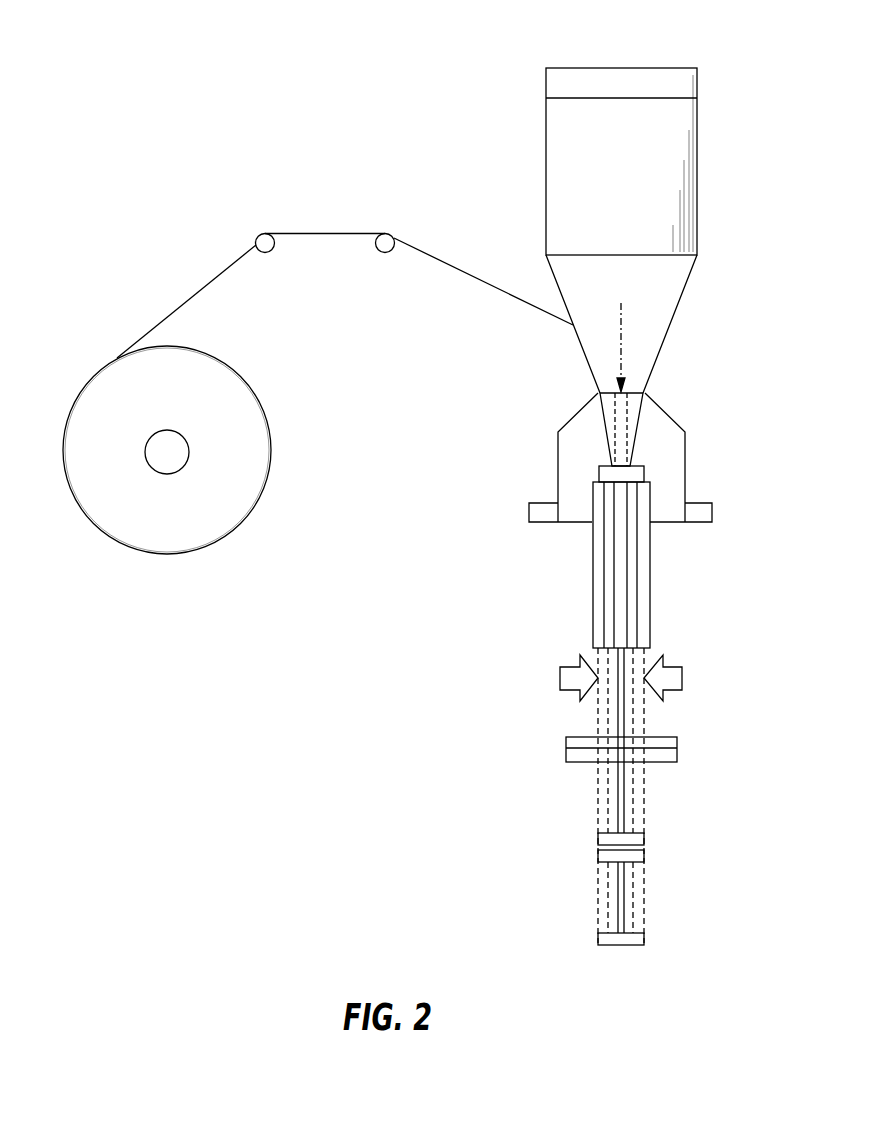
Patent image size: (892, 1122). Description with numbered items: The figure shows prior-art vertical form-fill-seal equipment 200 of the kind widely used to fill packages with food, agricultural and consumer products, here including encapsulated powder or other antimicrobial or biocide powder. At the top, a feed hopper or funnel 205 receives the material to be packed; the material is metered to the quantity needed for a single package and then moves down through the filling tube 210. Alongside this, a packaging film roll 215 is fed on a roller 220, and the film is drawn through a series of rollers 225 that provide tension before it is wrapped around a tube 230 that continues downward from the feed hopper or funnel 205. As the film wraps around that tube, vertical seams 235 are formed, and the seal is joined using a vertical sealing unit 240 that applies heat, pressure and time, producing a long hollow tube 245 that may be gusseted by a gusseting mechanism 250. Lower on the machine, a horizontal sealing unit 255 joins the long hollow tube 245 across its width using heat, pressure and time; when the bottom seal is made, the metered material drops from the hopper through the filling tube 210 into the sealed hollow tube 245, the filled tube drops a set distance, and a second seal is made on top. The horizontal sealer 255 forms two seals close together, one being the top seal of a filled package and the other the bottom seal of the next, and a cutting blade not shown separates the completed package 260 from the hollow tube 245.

The vertical form-fill-seal equipment 200 is at (615, 50).
The feed hopper or funnel 205 is at (697, 178).
The filling tube 210 is at (628, 420).
The packaging film roll 215 is at (270, 458).
The roller 220 is at (165, 475).
The series of rollers 225 is at (262, 233).
The tube 230 is at (607, 412).
The vertical seams 235 is at (617, 728).
The vertical sealing unit 240 is at (593, 592).
The long hollow tube 245 is at (628, 728).
The gusseting mechanism 250 is at (560, 678).
The horizontal sealing unit 255 is at (566, 745).
The package 260 is at (657, 898).